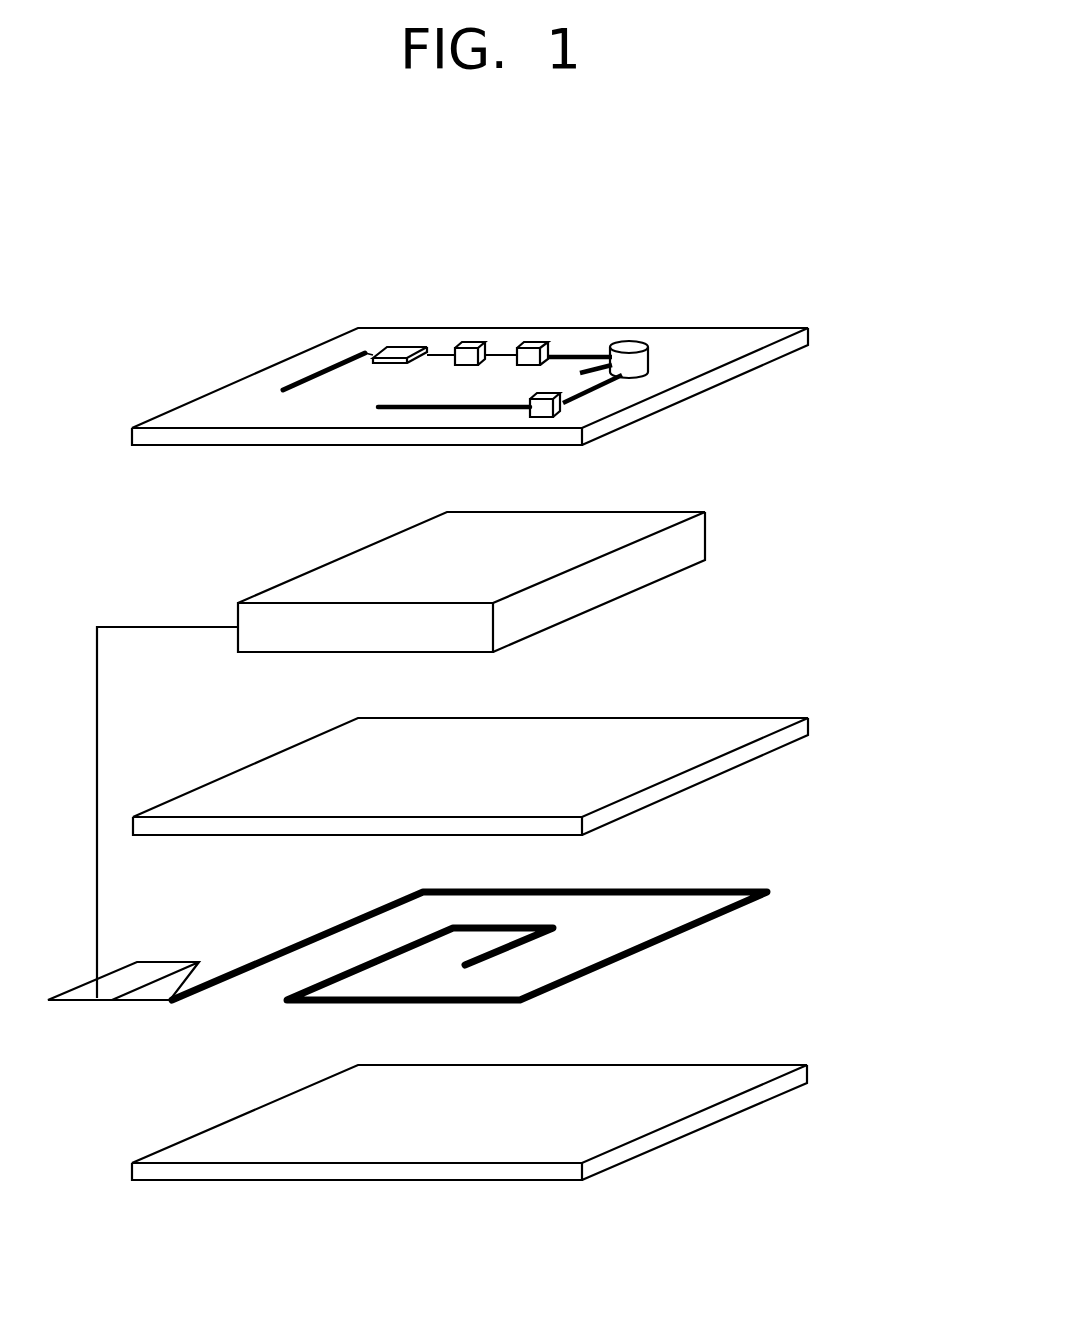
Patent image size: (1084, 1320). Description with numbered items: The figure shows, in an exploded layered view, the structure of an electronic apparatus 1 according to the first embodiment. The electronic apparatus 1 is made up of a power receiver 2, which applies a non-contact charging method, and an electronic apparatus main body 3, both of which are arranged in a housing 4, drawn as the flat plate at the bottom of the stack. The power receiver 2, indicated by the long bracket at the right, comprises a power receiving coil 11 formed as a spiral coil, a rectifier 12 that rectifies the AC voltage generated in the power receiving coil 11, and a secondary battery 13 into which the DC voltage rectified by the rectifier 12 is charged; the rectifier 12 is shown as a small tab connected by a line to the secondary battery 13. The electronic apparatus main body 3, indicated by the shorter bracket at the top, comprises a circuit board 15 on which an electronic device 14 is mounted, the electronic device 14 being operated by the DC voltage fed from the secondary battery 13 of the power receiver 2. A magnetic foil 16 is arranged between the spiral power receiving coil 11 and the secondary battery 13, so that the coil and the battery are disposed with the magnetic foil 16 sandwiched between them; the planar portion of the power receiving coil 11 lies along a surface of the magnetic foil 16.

The electronic apparatus 1 is at (728, 260).
The power receiver 2 is at (846, 503).
The electronic apparatus main body 3 is at (847, 317).
The housing 4 is at (688, 1135).
The power receiving coil 11 is at (637, 950).
The rectifier 12 is at (83, 1002).
The secondary battery 13 is at (602, 605).
The electronic device 14 is at (628, 343).
The circuit board 15 is at (700, 397).
The magnetic foil 16 is at (693, 787).